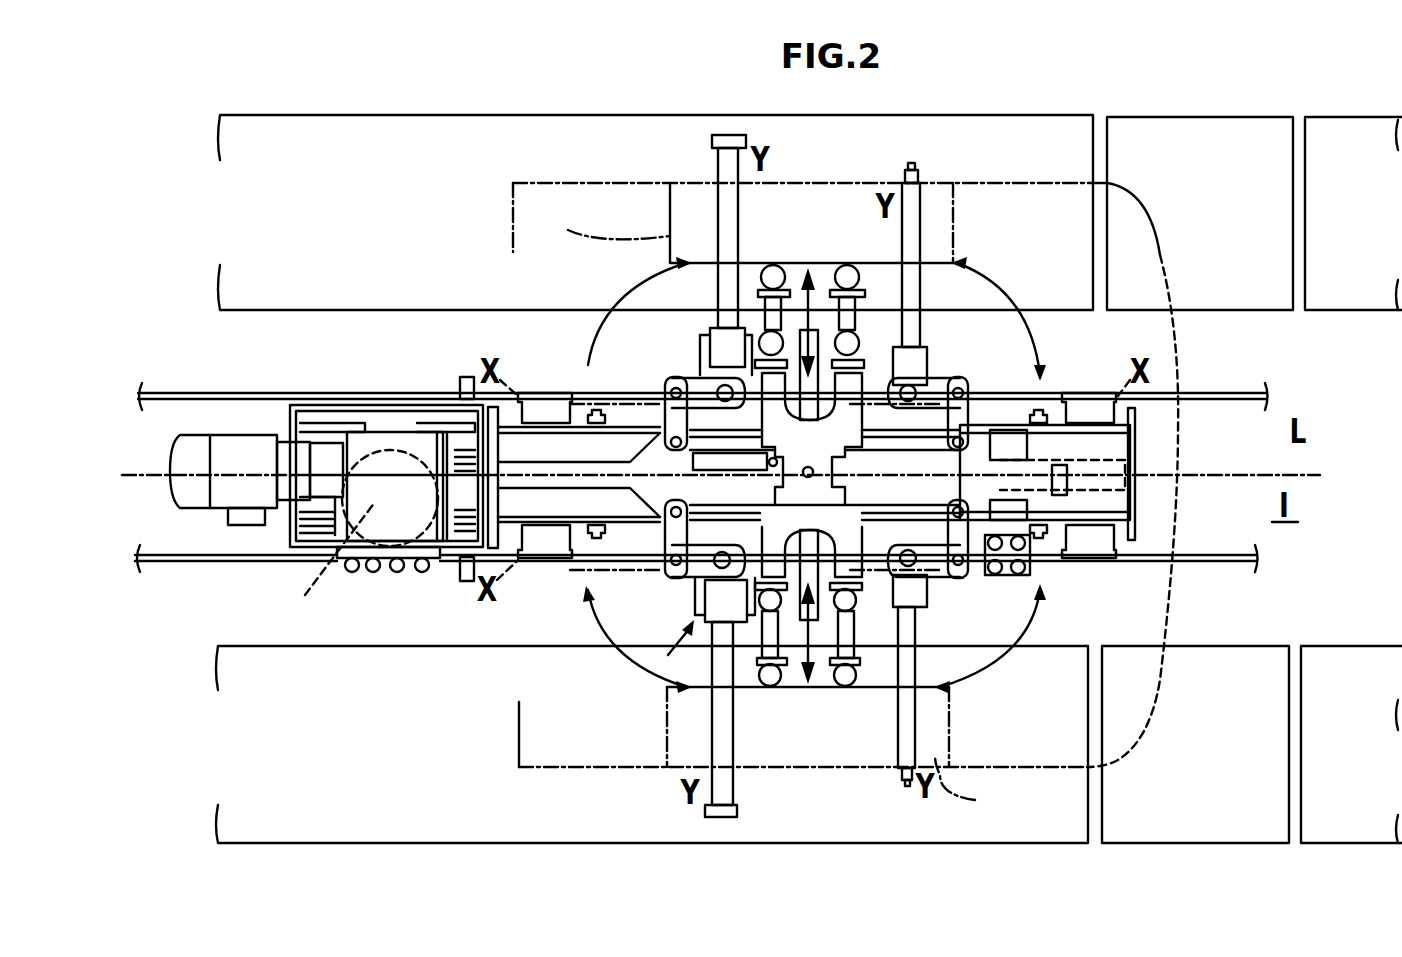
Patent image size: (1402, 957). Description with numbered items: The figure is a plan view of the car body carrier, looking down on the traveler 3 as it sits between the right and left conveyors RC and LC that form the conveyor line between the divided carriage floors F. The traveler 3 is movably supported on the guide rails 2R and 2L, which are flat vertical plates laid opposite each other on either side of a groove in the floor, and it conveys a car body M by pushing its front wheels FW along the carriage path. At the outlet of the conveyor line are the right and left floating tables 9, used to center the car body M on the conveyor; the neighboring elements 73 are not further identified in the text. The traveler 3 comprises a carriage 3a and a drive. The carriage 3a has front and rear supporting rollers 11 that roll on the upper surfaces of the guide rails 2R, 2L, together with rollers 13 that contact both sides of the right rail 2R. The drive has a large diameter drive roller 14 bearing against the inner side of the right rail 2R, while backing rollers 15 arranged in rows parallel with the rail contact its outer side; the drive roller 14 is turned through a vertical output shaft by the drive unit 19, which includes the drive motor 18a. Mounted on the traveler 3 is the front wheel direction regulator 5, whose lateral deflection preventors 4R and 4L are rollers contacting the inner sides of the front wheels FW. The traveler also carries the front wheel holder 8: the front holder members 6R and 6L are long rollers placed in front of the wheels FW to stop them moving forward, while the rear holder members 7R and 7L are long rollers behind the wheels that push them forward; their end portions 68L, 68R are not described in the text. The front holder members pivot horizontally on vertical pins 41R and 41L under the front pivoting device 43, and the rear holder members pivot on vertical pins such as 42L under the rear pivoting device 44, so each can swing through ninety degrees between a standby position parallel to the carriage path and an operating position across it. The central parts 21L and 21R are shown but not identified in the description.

The guide rail 2L is at (1230, 392).
The guide rail 2R is at (1230, 562).
The traveler 3 is at (285, 545).
The carriage 3a is at (390, 395).
The lateral deflection preventor 4L is at (843, 325).
The lateral deflection preventor 4R is at (843, 650).
The front wheel direction regulator 5 is at (868, 328).
The front holder member 6L is at (912, 215).
The front holder member 6R is at (910, 748).
The rear holder member 7L is at (720, 170).
The rear holder member 7R is at (718, 727).
The front wheel holder 8 is at (671, 653).
The floating table 9 is at (1153, 110).
The supporting rollers 11 is at (565, 392).
The rollers 13 is at (1008, 550).
The drive roller 14 is at (327, 563).
The backing rollers 15 is at (415, 575).
The drive motor 18a is at (230, 450).
The drive unit 19 is at (372, 440).
The left housing half 21L is at (845, 420).
The right housing half 21R is at (762, 530).
The vertical pin 41L is at (908, 385).
The vertical pin 41R is at (912, 562).
The vertical pin 42L is at (722, 388).
The front pivoting device 43 is at (975, 420).
The rear pivoting device 44 is at (633, 443).
The left rod head 68L is at (727, 135).
The right rod head 68R is at (737, 810).
The conveyor sections 73 is at (1200, 150).
The left conveyor LC is at (355, 150).
The right conveyor RC is at (410, 830).
The car body M is at (1020, 180).
The front wheels FW is at (787, 506).
The carriage floors F is at (1335, 140).